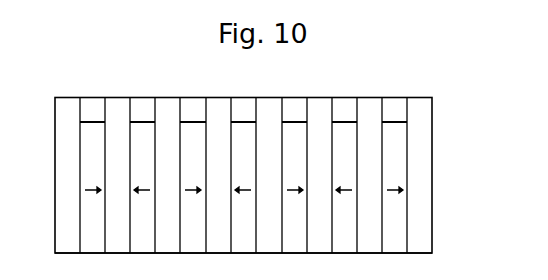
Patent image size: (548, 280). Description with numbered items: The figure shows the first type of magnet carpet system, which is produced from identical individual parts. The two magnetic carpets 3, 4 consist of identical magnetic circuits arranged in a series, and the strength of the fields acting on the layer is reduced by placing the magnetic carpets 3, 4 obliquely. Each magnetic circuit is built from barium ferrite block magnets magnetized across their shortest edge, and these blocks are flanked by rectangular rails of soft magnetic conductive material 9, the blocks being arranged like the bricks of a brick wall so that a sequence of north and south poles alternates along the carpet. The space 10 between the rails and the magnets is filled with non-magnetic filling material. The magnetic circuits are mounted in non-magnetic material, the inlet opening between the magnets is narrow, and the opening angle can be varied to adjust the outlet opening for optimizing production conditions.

The magnetic carpet 3 is at (432, 192).
The magnetic carpet 4 is at (432, 210).
The soft magnetic conductive material rail 9 is at (370, 102).
The space 10 is at (191, 112).